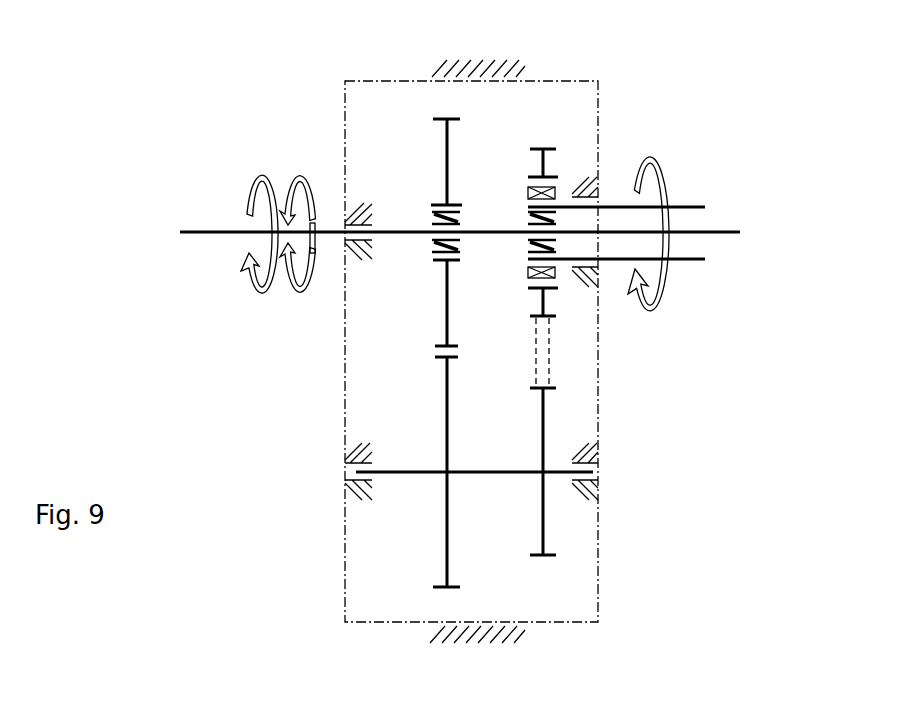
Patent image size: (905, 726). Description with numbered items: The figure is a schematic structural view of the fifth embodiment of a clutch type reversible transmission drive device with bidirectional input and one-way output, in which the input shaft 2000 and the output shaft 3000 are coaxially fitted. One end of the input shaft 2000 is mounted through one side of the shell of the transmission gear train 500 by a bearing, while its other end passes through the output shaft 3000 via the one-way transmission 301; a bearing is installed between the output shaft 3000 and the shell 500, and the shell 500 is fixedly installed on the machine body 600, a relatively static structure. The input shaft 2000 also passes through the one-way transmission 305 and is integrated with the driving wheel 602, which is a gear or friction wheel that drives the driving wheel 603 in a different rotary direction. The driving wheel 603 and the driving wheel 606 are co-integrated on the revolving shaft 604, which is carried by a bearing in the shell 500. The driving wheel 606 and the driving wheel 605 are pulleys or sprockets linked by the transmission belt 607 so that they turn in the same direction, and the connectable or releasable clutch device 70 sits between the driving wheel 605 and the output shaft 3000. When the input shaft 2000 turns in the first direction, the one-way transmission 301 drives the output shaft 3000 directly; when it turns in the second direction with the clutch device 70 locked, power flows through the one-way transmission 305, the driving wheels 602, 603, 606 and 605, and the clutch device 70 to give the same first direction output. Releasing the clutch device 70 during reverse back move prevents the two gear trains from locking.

The machine body 600 is at (492, 63).
The shell of the transmission gear train 500 is at (345, 147).
The input shaft 2000 is at (232, 231).
The output shaft 3000 is at (677, 204).
The driving wheel 602 is at (445, 155).
The driving wheel 605 is at (551, 147).
The connectable or releasable clutch device 70 is at (527, 193).
The one-way transmission 305 is at (436, 250).
The one-way transmission 301 is at (526, 250).
The driving wheel 603 is at (445, 430).
The transmission belt 607 is at (534, 349).
The revolving shaft 604 is at (556, 475).
The driving wheel 606 is at (547, 559).